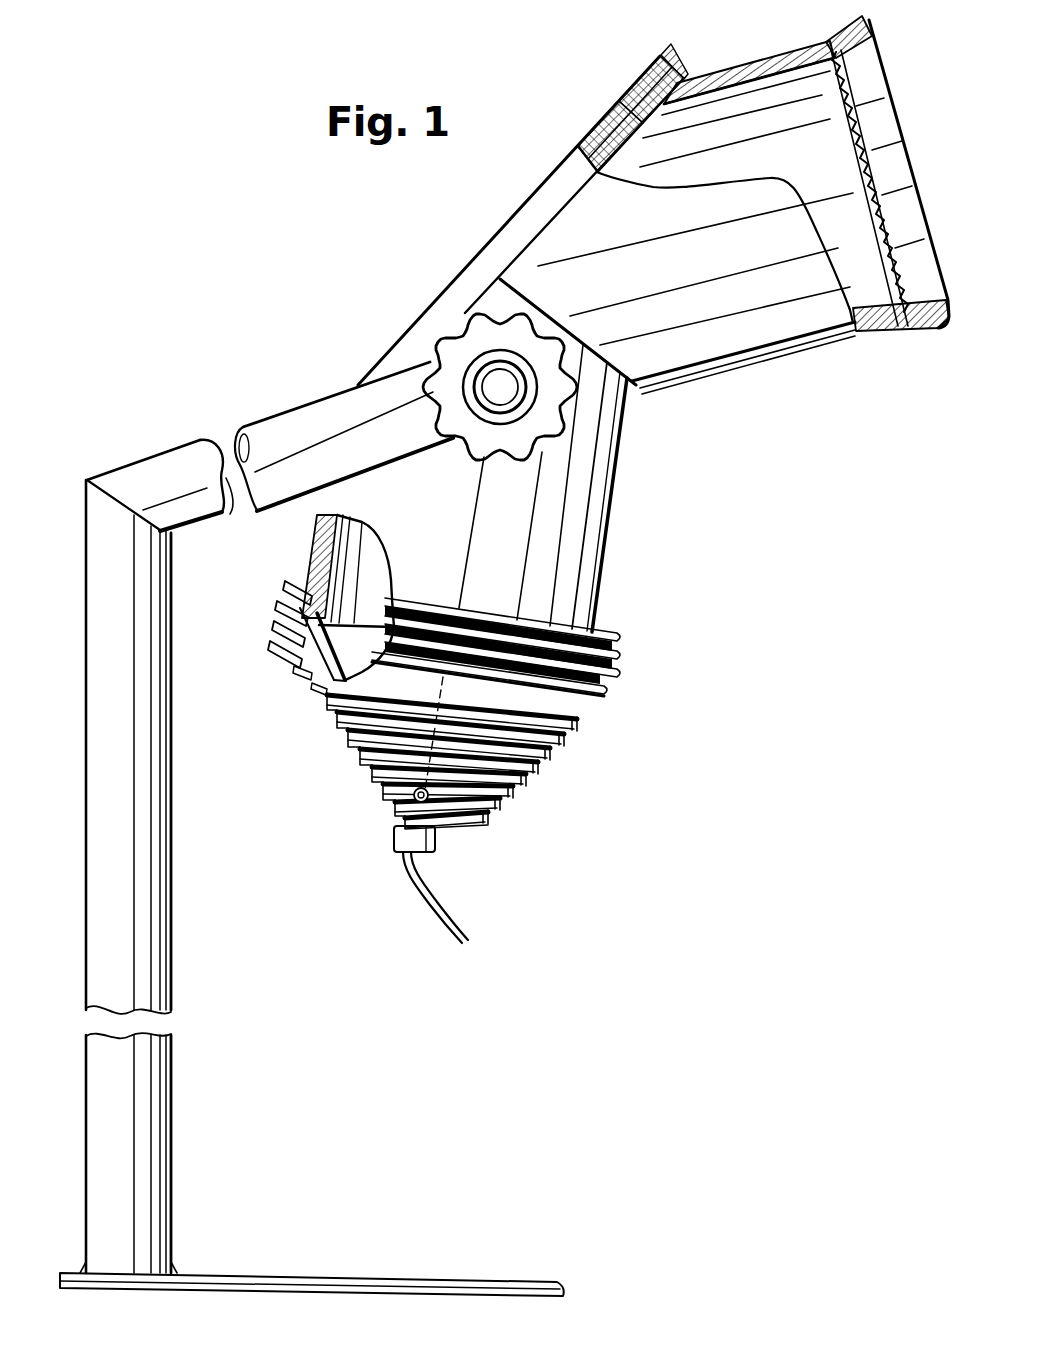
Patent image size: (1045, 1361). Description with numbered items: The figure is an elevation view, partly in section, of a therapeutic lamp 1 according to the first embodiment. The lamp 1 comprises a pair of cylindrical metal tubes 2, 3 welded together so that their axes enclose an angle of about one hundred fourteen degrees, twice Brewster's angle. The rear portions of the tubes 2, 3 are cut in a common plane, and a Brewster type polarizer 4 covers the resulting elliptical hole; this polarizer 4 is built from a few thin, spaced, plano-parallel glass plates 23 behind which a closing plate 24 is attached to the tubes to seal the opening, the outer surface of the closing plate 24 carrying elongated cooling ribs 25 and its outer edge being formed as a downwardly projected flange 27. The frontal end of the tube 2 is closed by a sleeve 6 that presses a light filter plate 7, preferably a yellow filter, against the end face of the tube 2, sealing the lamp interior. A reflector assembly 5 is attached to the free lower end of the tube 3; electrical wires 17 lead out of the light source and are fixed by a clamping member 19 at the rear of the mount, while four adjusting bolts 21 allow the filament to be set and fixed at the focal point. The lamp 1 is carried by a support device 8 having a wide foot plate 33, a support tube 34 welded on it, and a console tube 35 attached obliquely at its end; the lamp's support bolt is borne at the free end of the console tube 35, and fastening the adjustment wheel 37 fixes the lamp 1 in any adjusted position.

The therapeutic lamp 1 is at (704, 396).
The cylindrical metal tube 2 is at (768, 338).
The cylindrical metal tube 3 is at (594, 571).
The Brewster type polarizer 4 is at (546, 178).
The reflector assembly 5 is at (583, 735).
The sleeve 6 is at (936, 328).
The light filter plate 7 is at (851, 106).
The support device 8 is at (233, 411).
The electrical wires 17 is at (414, 898).
The clamping member 19 is at (437, 843).
The adjusting bolts 21 is at (413, 801).
The glass plates 23 is at (598, 124).
The closing plate 24 is at (667, 50).
The cooling ribs 25 is at (618, 100).
The flange 27 is at (680, 66).
The foot plate 33 is at (373, 1284).
The support tube 34 is at (160, 903).
The console tube 35 is at (326, 412).
The adjustment wheel 37 is at (485, 462).